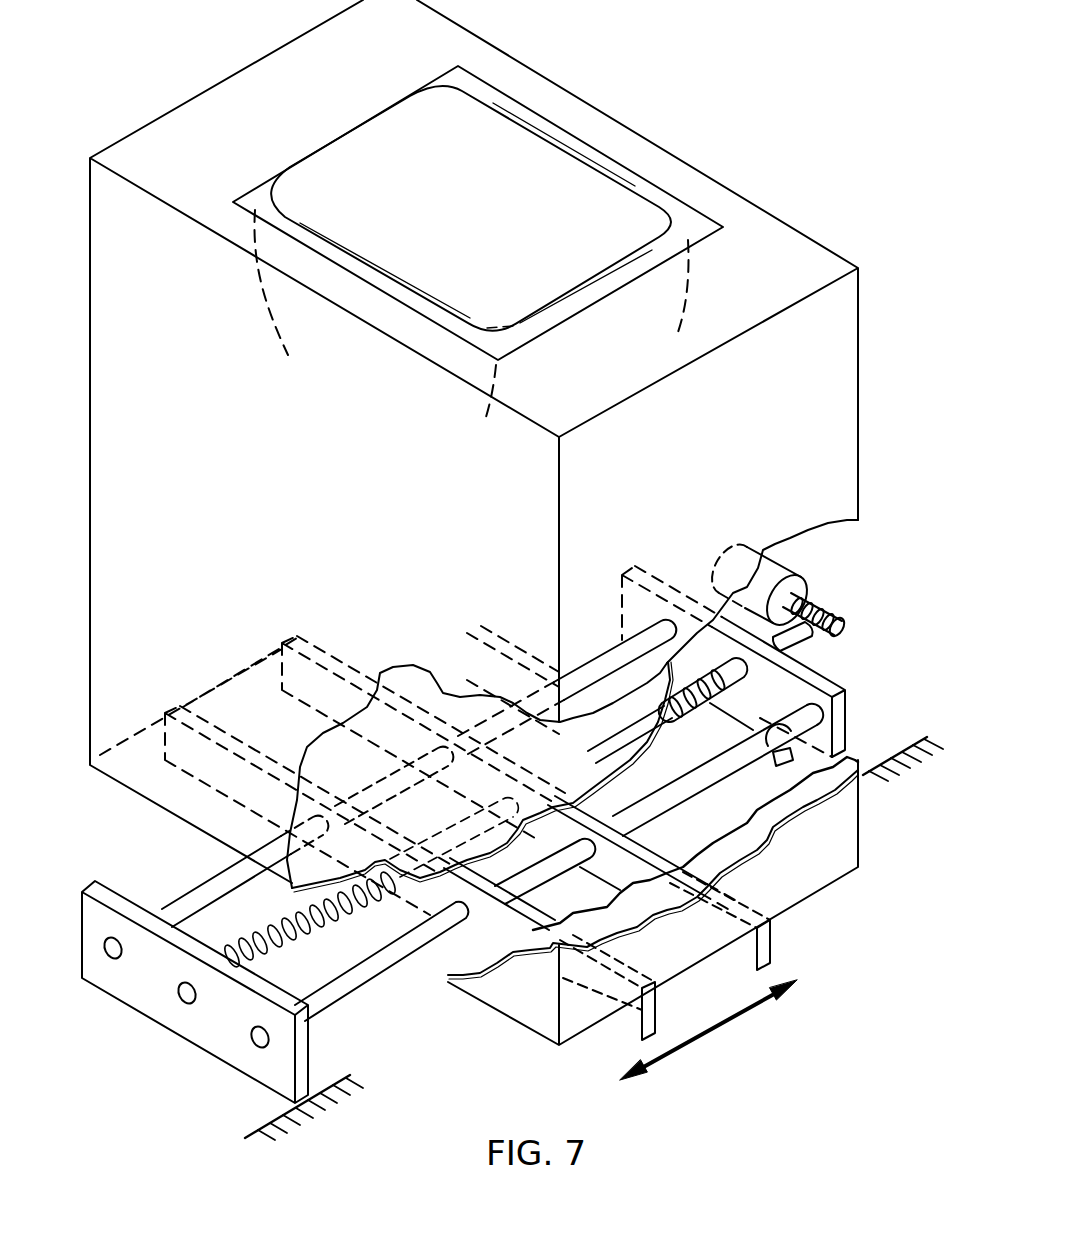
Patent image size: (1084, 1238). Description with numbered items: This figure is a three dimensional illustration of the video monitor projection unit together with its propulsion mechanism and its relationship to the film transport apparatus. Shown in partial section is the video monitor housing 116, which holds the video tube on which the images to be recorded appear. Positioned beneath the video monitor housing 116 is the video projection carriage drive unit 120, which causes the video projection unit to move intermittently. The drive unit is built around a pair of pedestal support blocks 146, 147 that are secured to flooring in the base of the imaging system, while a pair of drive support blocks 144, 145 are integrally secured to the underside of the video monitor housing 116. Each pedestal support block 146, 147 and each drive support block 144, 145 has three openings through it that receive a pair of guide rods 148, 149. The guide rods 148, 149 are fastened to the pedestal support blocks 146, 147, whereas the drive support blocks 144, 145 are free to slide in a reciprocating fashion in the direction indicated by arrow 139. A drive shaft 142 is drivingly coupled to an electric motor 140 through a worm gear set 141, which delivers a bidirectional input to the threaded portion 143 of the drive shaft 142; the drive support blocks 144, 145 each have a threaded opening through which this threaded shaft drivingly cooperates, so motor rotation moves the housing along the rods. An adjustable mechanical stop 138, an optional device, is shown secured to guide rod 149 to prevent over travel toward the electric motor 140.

The video monitor housing 116 is at (848, 437).
The video projection carriage drive unit 120 is at (444, 965).
The adjustable mechanical stop 138 is at (797, 733).
The arrow 139 is at (687, 1047).
The electric motor 140 is at (780, 566).
The worm gear set 141 is at (840, 612).
The drive shaft 142 is at (797, 657).
The threaded portion 143 is at (692, 706).
The drive support block 144 is at (650, 1010).
The drive support block 145 is at (765, 947).
The pedestal support block 146 is at (192, 1032).
The pedestal support block 147 is at (845, 703).
The guide rod 148 is at (213, 887).
The guide rod 149 is at (340, 992).